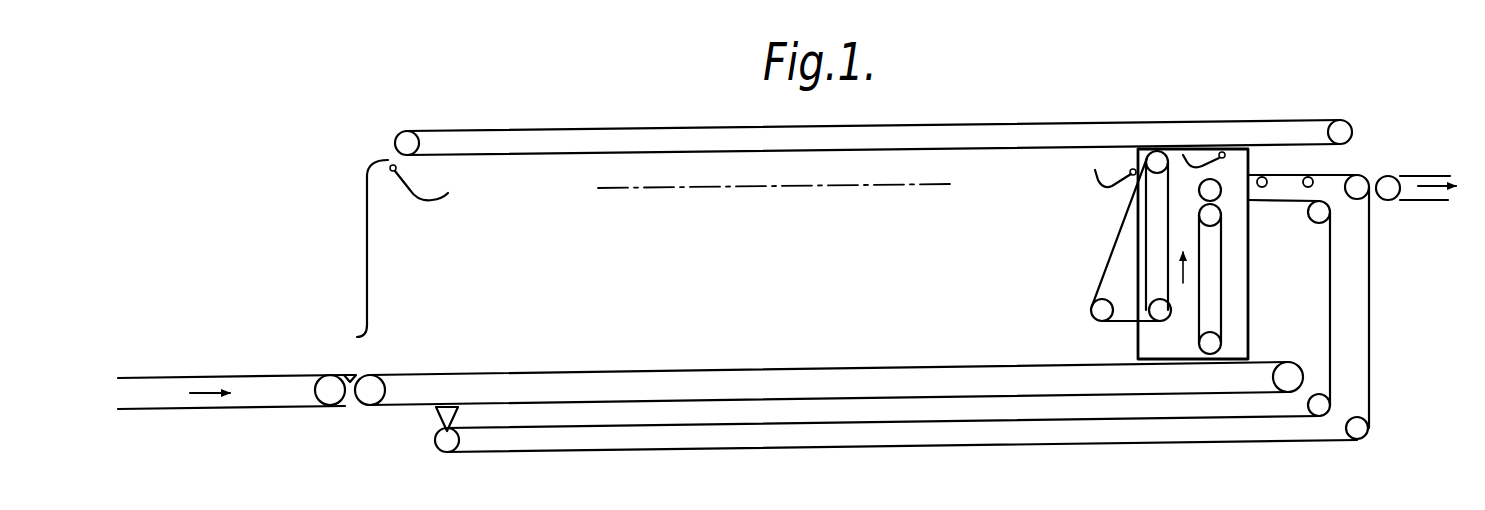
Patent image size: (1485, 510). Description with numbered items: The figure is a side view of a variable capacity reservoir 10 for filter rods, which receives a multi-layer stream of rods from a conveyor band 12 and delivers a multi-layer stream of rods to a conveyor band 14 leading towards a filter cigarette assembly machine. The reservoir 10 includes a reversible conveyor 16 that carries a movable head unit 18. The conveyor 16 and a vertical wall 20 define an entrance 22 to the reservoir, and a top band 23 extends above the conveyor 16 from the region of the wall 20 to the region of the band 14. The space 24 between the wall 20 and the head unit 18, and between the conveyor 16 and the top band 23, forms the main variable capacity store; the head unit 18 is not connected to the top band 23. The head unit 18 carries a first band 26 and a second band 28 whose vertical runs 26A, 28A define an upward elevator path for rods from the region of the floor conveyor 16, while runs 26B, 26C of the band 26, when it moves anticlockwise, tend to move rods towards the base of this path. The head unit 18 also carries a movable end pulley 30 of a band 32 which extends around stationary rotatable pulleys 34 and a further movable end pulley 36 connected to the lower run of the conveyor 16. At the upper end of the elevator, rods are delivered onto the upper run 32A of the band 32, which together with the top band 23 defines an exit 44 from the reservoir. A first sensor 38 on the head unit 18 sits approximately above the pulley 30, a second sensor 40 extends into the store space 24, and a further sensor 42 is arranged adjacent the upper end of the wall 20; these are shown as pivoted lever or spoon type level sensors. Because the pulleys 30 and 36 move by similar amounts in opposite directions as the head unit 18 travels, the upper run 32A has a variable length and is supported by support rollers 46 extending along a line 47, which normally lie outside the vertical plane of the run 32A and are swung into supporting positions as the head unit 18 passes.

The variable capacity reservoir 10 is at (922, 110).
The conveyor band 12 is at (207, 376).
The conveyor band 14 is at (1418, 174).
The reversible conveyor 16 is at (763, 368).
The head unit 18 is at (1250, 275).
The vertical wall 20 is at (367, 276).
The entrance 22 is at (362, 352).
The top band 23 is at (653, 156).
The space 24 is at (768, 282).
The first band 26 is at (1096, 276).
The vertical run 26A is at (1168, 240).
The run 26B is at (1122, 224).
The run 26C is at (1120, 324).
The second band 28 is at (1226, 310).
The vertical run 28A is at (1207, 322).
The movable end pulley 30 is at (1220, 194).
The band 32 is at (1371, 308).
The upper run 32A is at (1283, 173).
The stationary pulleys 34 is at (1330, 226).
The movable end pulley 36 is at (436, 445).
The first sensor 38 is at (1204, 160).
The second sensor 40 is at (1118, 176).
The further sensor 42 is at (407, 201).
The exit 44 is at (1364, 152).
The support rollers 46 is at (1259, 176).
The line 47 is at (848, 183).